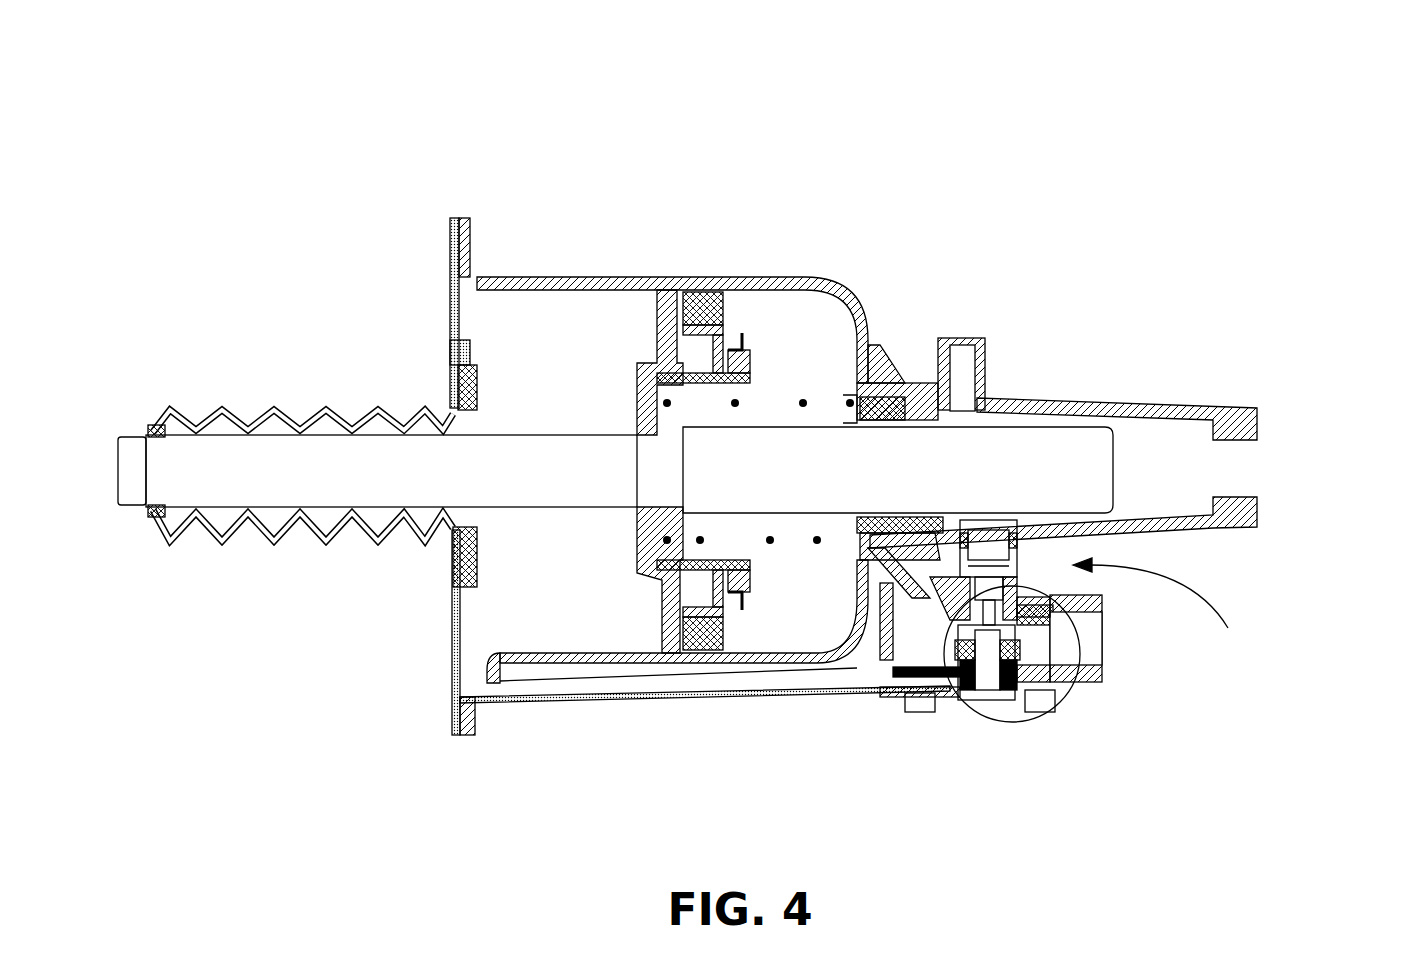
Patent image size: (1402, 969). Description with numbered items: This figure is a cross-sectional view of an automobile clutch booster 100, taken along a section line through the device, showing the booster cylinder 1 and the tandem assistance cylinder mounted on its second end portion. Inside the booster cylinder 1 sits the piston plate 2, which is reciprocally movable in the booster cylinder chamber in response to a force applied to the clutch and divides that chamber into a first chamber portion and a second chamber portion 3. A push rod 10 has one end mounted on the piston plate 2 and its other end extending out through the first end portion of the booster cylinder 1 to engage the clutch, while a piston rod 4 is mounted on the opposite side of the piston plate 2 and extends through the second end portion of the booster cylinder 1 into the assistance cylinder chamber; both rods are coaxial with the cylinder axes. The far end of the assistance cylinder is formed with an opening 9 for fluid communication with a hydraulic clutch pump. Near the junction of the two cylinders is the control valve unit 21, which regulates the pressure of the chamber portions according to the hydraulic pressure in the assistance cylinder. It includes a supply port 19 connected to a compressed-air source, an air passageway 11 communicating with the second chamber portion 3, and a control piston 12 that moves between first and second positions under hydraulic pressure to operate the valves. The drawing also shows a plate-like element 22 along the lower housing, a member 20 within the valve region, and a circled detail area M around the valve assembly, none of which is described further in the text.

The clutch booster 100 is at (783, 60).
The push rod 10 is at (285, 470).
The booster cylinder 1 is at (527, 277).
The piston plate 2 is at (652, 357).
The second chamber portion 3 is at (688, 397).
The piston rod 4 is at (740, 470).
The air passageway 11 is at (891, 525).
The control piston 12 is at (980, 527).
The valve body 20 is at (983, 585).
The supply port 19 is at (1090, 647).
The opening 9 is at (1217, 478).
The control valve unit 21 is at (1161, 612).
The plate 22 is at (592, 690).
The valve detail region M is at (1060, 683).